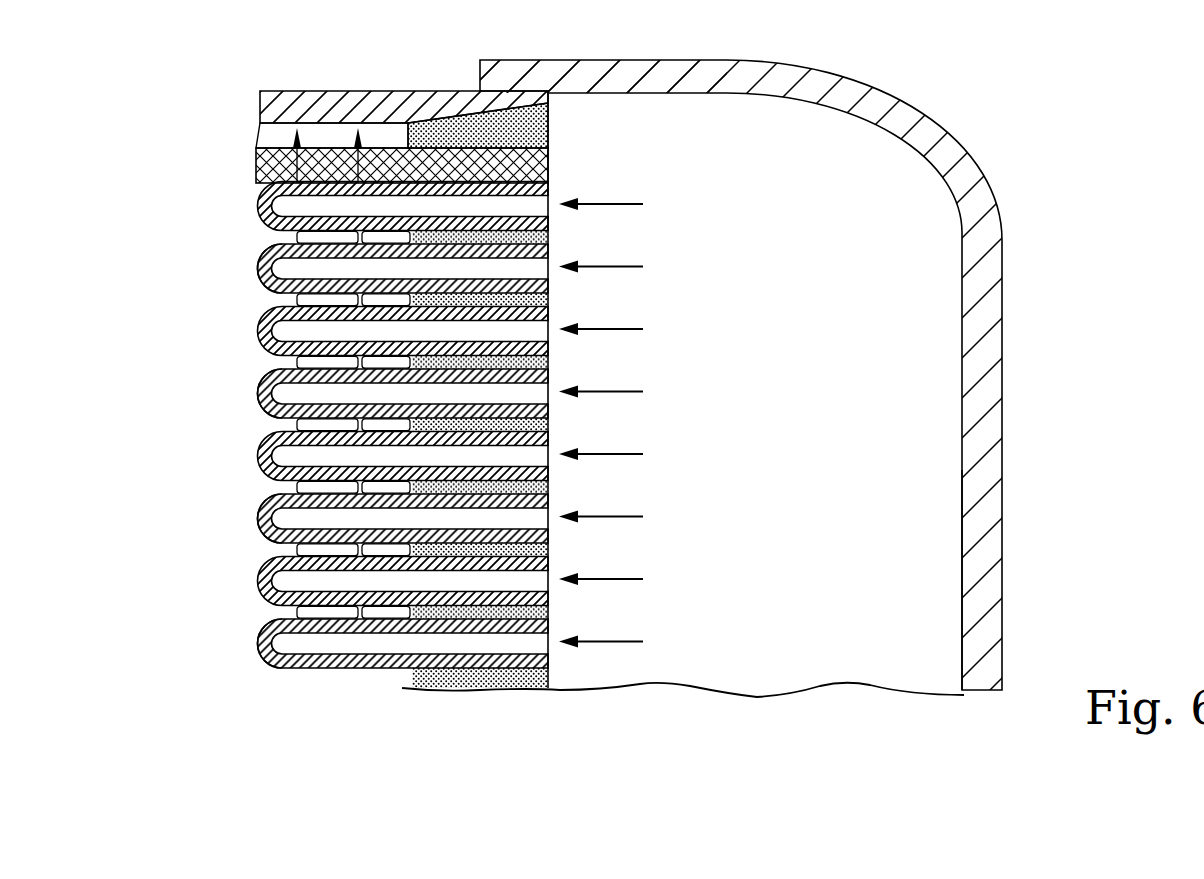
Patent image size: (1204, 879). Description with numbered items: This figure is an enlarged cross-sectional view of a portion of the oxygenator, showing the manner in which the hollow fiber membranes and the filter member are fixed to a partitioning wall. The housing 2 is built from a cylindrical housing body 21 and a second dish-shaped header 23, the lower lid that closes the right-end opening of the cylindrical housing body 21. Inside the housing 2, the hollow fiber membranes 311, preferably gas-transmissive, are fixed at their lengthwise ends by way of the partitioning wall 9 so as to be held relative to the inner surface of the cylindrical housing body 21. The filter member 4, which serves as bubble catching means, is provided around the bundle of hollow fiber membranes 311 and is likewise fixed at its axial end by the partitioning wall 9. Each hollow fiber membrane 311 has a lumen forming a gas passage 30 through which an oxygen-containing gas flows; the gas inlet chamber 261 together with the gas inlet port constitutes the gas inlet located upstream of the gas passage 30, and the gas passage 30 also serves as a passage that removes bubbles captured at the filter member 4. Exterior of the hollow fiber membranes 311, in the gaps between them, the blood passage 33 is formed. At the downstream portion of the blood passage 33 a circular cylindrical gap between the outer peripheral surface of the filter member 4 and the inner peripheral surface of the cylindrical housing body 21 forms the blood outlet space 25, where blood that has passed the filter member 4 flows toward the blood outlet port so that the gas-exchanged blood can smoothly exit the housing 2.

The housing 2 is at (819, 69).
The second dish-shaped header 23 is at (620, 66).
The gas inlet chamber 261 is at (915, 590).
The cylindrical housing body 21 is at (352, 105).
The blood outlet space 25 is at (275, 135).
The partitioning wall 9 is at (450, 110).
The filter member 4 is at (258, 172).
The gas passage 30 is at (281, 210).
The hollow fiber membrane 311 is at (268, 278).
The blood passage 33 is at (297, 300).